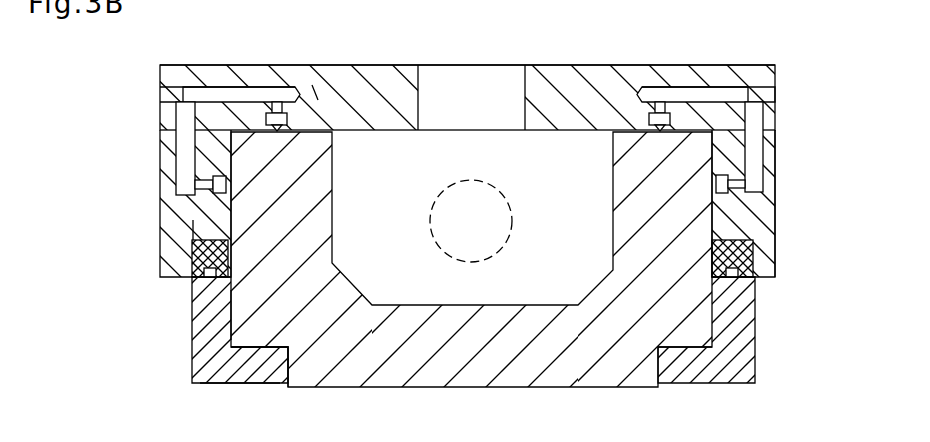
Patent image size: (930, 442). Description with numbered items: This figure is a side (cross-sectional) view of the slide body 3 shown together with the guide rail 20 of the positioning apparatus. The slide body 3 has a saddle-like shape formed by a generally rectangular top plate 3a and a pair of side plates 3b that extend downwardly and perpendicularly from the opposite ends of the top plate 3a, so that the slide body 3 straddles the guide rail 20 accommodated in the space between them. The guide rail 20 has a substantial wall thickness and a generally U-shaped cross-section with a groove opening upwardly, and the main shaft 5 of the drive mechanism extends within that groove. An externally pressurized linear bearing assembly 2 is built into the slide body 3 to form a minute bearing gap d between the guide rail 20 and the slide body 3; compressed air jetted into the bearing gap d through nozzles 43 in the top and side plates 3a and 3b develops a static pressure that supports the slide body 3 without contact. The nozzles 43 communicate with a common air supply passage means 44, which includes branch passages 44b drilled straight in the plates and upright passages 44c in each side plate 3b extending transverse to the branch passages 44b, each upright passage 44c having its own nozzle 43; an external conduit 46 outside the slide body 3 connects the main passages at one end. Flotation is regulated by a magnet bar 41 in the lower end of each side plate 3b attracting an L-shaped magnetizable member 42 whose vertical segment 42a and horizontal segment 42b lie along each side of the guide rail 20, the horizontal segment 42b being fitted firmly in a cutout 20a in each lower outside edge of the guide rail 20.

The externally pressurized linear bearing assembly 2 is at (778, 160).
The slide body 3 is at (630, 63).
The top plate 3a is at (372, 95).
The side plates 3b is at (182, 212).
The main shaft 5 is at (476, 181).
The guide rail 20 is at (655, 225).
The cutout 20a is at (268, 350).
The magnet bar 41 is at (192, 247).
The magnetizable member 42 is at (202, 337).
The vertical segment 42a is at (197, 300).
The horizontal segment 42b is at (222, 372).
The nozzles 43 is at (228, 105).
The air supply passage means 44 is at (686, 87).
The branch passages 44b is at (200, 92).
The upright passages 44c is at (183, 177).
The external conduit 46 is at (494, 65).
The bearing gap d is at (312, 85).